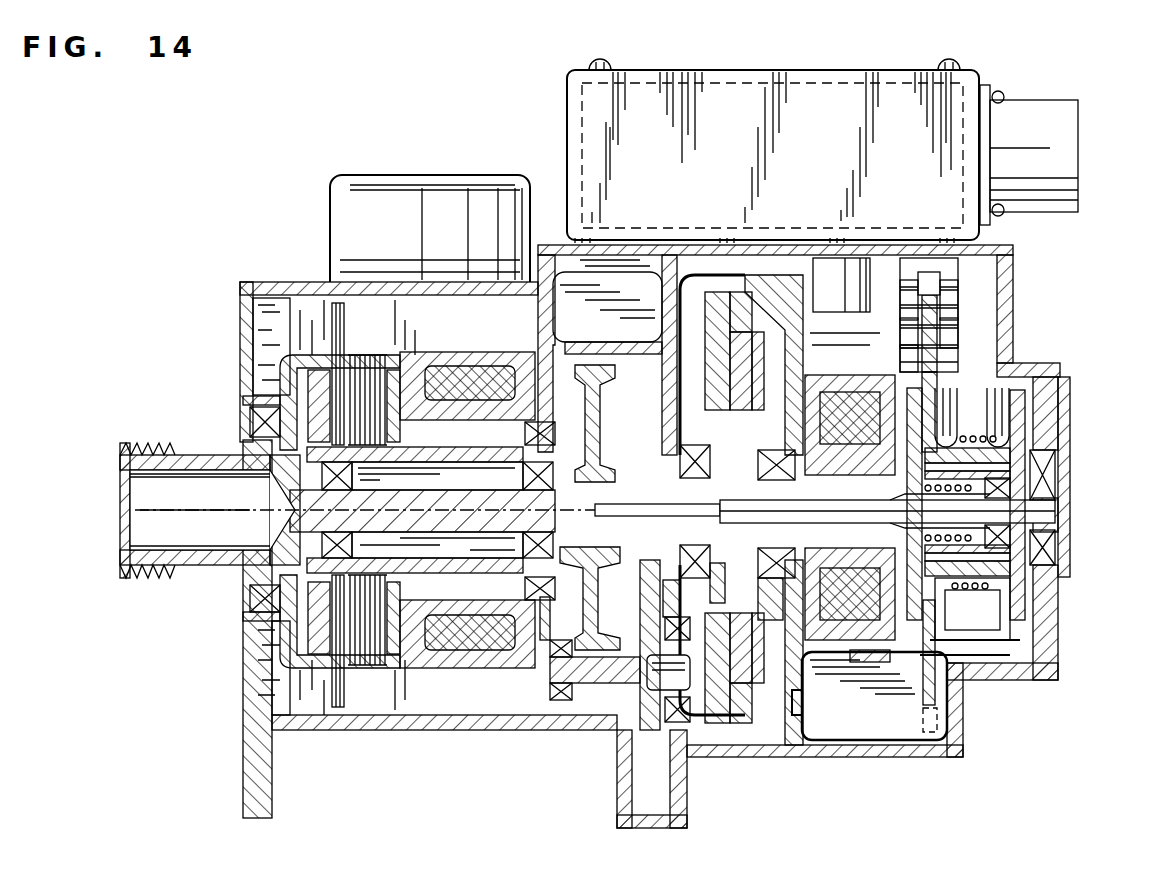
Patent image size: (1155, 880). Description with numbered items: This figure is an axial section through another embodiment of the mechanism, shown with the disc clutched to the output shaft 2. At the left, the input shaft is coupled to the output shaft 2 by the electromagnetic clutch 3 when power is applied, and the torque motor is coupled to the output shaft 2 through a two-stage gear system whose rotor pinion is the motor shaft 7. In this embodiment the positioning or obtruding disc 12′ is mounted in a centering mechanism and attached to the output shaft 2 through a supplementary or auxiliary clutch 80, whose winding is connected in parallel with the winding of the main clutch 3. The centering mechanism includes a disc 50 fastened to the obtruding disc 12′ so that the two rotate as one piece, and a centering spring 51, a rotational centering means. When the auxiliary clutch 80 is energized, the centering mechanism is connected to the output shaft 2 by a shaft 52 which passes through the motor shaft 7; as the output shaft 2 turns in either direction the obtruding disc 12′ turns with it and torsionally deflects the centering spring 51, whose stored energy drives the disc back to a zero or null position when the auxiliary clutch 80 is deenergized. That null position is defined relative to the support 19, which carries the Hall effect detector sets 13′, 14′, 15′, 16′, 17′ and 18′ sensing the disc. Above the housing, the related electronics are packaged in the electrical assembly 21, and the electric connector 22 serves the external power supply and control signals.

The electrical assembly 21 is at (725, 92).
The electric connector 22 is at (1079, 122).
The support bracket 19 is at (960, 308).
The Hall effect detector 13′ is at (948, 301).
The Hall effect detector 14′ is at (909, 301).
The Hall effect detector 15′ is at (952, 325).
The Hall effect detector 16′ is at (906, 328).
The Hall effect detector 17′ is at (958, 358).
The Hall effect detector 18′ is at (904, 355).
The auxiliary clutch 80 is at (845, 410).
The centering spring 51 is at (964, 410).
The disc 50 is at (1026, 418).
The shaft 52 is at (862, 519).
The motor shaft 7 is at (632, 490).
The output shaft 2 is at (388, 560).
The electromagnetic clutch 3 is at (474, 646).
The obtruding disc 12′ is at (936, 695).